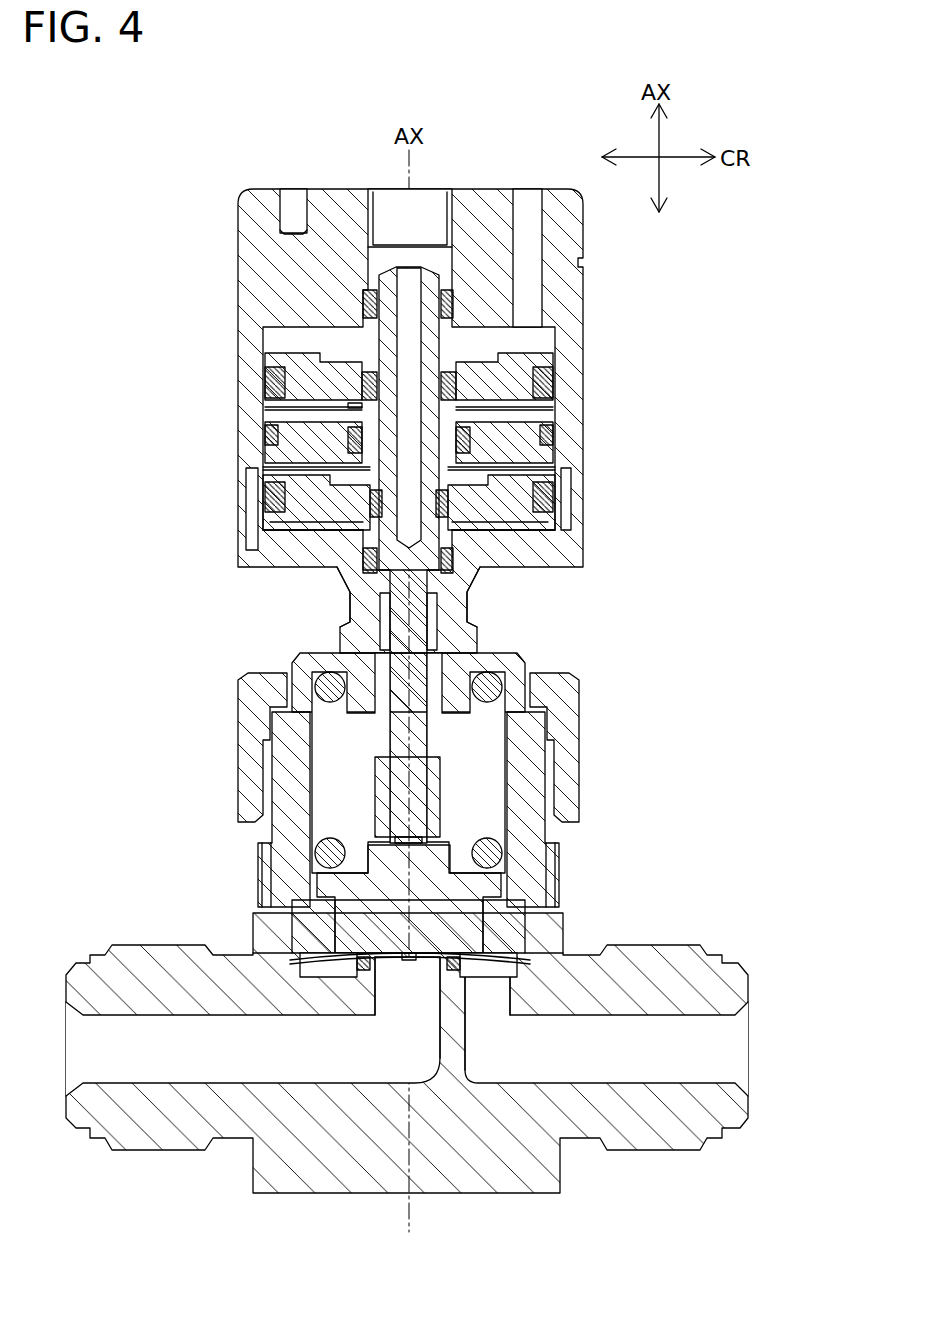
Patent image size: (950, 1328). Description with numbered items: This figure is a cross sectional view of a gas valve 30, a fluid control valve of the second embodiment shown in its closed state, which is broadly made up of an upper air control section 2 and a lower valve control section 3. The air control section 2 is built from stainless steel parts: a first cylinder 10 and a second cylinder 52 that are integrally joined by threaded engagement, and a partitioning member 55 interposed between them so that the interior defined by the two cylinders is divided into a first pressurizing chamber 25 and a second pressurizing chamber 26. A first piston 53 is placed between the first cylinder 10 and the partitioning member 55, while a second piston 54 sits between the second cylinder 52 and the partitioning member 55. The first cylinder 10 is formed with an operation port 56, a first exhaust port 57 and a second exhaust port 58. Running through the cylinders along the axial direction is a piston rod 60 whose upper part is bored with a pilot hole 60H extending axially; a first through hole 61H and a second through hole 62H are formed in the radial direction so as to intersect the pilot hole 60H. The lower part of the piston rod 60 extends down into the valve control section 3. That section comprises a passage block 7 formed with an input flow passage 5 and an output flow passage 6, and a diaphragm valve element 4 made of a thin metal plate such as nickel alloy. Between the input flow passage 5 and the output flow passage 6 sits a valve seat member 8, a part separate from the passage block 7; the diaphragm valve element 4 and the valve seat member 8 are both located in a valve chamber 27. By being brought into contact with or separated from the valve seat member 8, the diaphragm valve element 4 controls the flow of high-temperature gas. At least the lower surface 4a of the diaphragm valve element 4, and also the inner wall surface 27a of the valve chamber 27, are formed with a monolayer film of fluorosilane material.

The air control section 2 is at (56, 187).
The valve control section 3 is at (56, 1208).
The gas valve 30 is at (262, 157).
The first cylinder 10 is at (562, 301).
The operation port 56 is at (370, 216).
The first exhaust port 57 is at (521, 212).
The second exhaust port 58 is at (262, 455).
The first piston 53 is at (513, 356).
The partitioning member 55 is at (520, 445).
The second piston 54 is at (515, 480).
The second pressurizing chamber 26 is at (505, 537).
The pilot hole 60H is at (372, 300).
The first through hole 61H is at (355, 410).
The second through hole 62H is at (370, 557).
The first pressurizing chamber 25 is at (505, 408).
The piston rod 60 is at (352, 582).
The second cylinder 52 is at (517, 574).
The diaphragm valve element 4 is at (335, 962).
The surface 4a is at (300, 962).
The passage block 7 is at (425, 1195).
The input flow passage 5 is at (70, 1004).
The output flow passage 6 is at (748, 1008).
The valve seat member 8 is at (462, 970).
The valve chamber 27 is at (338, 972).
The inner wall surface 27a is at (316, 975).